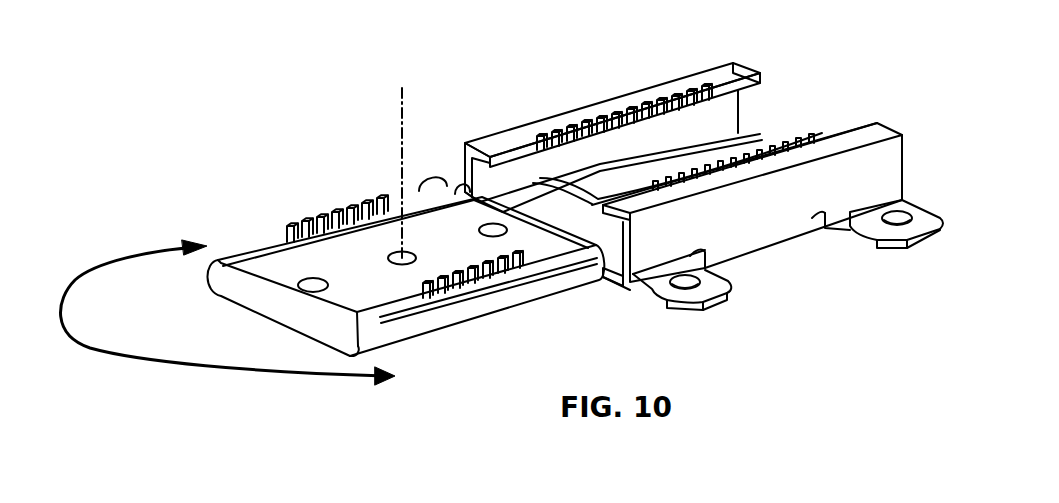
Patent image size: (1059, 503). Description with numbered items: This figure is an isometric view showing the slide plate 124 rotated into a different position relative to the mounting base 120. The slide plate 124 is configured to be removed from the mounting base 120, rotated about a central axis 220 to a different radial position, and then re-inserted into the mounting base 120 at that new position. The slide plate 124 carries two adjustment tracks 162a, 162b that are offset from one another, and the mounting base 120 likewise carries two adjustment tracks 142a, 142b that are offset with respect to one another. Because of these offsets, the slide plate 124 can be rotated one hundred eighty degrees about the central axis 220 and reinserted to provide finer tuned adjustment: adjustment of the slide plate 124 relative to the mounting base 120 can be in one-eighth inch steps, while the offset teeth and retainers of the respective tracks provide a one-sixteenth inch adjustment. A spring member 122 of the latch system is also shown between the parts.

The mounting base 120 is at (797, 239).
The spring member 122 is at (752, 140).
The slide plate 124 is at (276, 300).
The adjustment track 142a is at (630, 97).
The adjustment track 142b is at (878, 133).
The adjustment track 162a is at (483, 285).
The adjustment track 162b is at (285, 238).
The central axis 220 is at (406, 116).